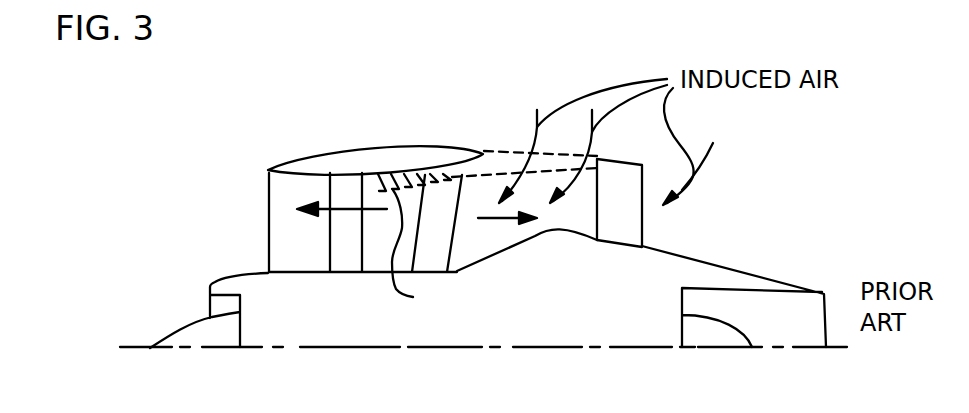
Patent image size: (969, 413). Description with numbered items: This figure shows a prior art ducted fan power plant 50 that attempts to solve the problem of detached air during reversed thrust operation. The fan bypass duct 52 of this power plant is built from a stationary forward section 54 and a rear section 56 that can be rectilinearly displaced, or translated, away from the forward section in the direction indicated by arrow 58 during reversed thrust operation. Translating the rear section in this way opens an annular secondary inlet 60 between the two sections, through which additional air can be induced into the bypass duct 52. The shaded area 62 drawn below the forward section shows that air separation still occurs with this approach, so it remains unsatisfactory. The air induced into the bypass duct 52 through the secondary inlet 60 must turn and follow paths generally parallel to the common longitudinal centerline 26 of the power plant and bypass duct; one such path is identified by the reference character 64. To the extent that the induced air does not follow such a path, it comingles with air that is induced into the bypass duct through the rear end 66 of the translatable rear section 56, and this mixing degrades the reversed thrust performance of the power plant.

The common longitudinal centerline 26 is at (385, 347).
The power plant 50 is at (188, 267).
The fan bypass duct 52 is at (362, 128).
The stationary forward section 54 is at (462, 143).
The rear section 56 is at (613, 158).
The arrow 58 is at (498, 220).
The annular secondary inlet 60 is at (488, 155).
The shaded area 62 is at (414, 243).
The induced air path 64 is at (323, 211).
The rear end 66 is at (644, 241).